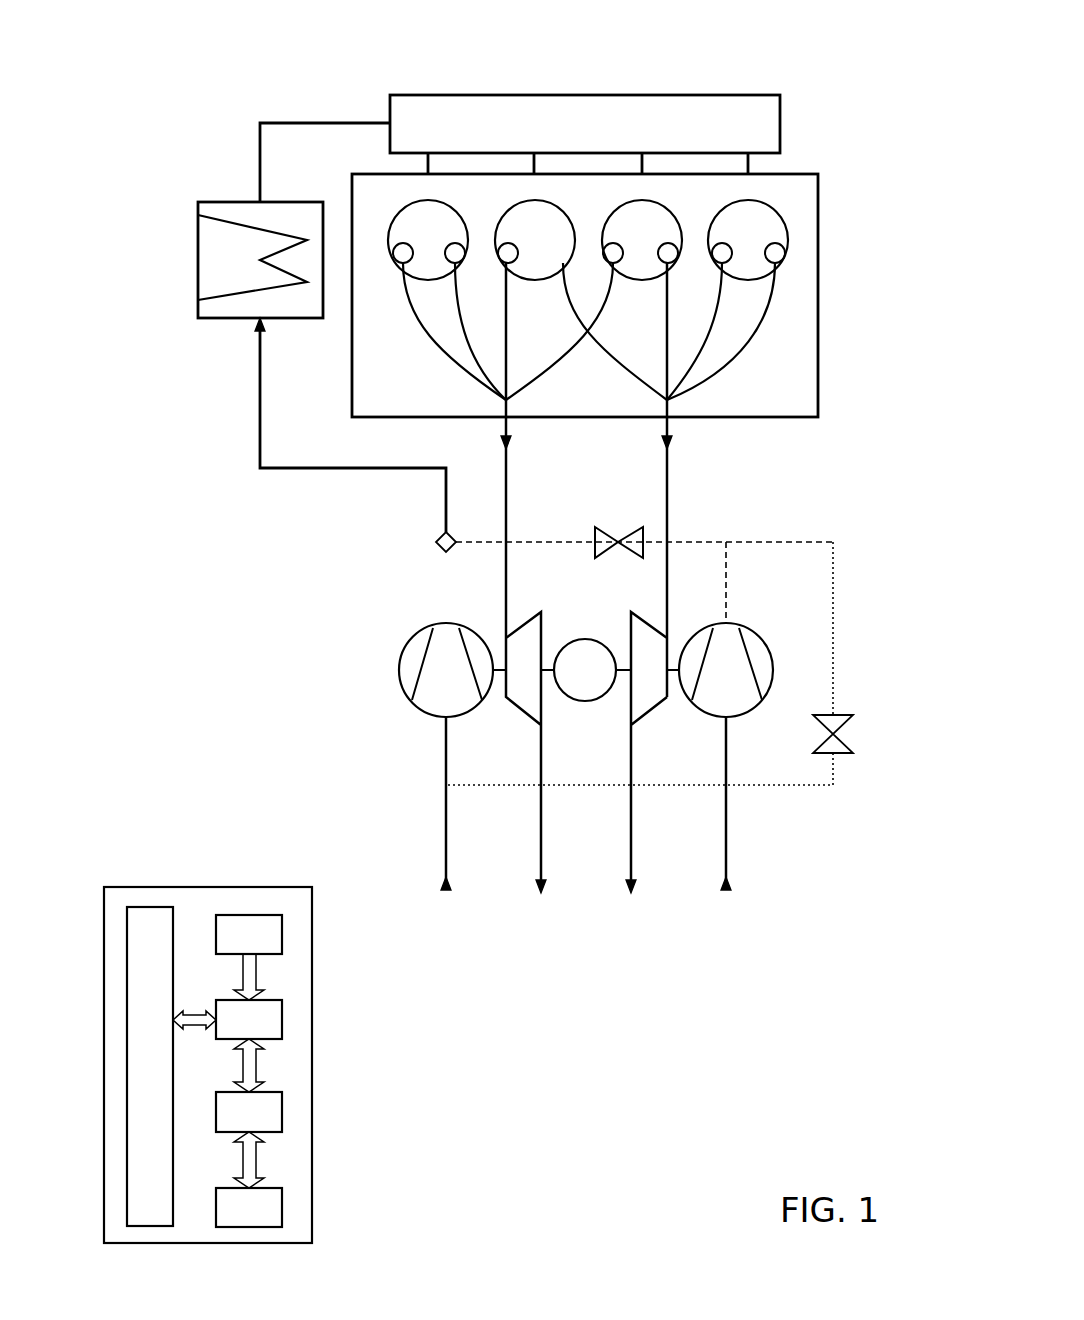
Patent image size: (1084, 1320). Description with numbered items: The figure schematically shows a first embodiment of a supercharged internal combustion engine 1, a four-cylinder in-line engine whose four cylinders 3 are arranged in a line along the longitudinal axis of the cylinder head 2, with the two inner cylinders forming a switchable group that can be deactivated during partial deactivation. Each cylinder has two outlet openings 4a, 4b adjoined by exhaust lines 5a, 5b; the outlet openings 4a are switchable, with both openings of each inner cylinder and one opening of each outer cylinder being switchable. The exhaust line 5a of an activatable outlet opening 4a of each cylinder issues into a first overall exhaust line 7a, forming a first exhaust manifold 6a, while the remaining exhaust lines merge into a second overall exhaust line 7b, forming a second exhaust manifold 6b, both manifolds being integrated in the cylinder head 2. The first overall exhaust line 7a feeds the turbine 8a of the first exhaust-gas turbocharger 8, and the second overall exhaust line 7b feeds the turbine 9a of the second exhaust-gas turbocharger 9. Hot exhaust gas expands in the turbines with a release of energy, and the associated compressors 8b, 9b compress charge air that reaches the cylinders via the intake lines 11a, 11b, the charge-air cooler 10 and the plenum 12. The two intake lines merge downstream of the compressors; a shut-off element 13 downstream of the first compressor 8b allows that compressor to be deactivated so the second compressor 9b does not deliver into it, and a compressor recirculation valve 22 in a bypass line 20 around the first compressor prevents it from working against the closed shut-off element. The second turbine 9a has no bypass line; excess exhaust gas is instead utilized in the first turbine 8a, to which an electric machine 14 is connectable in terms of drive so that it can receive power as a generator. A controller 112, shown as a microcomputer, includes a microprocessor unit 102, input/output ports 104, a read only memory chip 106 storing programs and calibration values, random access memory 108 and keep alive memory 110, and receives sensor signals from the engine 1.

The internal combustion engine 1 is at (436, 74).
The cylinder head 2 is at (803, 182).
The cylinders 3 is at (748, 200).
The switchable outlet opening 4a is at (452, 246).
The outlet opening 4b is at (398, 262).
The exhaust line 5a is at (713, 350).
The exhaust line 5b is at (485, 350).
The first exhaust manifold 6a is at (693, 280).
The second exhaust manifold 6b is at (473, 368).
The first overall exhaust line 7a is at (667, 460).
The second overall exhaust line 7b is at (506, 460).
The first exhaust-gas turbocharger 8 is at (649, 752).
The turbine 8a is at (628, 640).
The compressor 8b is at (720, 670).
The second exhaust-gas turbocharger 9 is at (522, 752).
The turbine 9a is at (525, 632).
The compressor 9b is at (452, 670).
The charge-air cooler 10 is at (213, 255).
The intake line 11a is at (726, 827).
The intake line 11b is at (446, 827).
The plenum 12 is at (410, 117).
The shut-off element 13 is at (610, 527).
The electric machine 14 is at (571, 685).
The bypass line 20 is at (833, 622).
The compressor recirculation valve 22 is at (825, 725).
The microprocessor unit 102 is at (283, 1013).
The input/output ports 104 is at (176, 915).
The read only memory chip 106 is at (283, 932).
The random access memory 108 is at (283, 1110).
The keep alive memory 110 is at (283, 1205).
The controller 112 is at (300, 887).